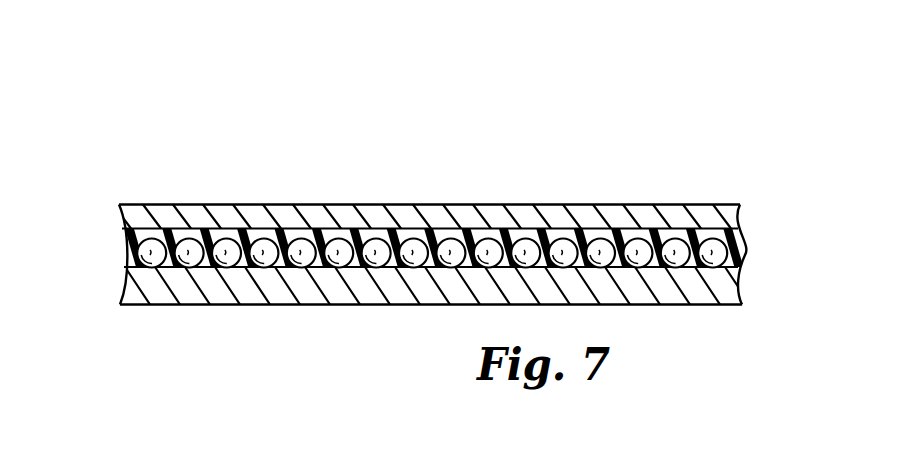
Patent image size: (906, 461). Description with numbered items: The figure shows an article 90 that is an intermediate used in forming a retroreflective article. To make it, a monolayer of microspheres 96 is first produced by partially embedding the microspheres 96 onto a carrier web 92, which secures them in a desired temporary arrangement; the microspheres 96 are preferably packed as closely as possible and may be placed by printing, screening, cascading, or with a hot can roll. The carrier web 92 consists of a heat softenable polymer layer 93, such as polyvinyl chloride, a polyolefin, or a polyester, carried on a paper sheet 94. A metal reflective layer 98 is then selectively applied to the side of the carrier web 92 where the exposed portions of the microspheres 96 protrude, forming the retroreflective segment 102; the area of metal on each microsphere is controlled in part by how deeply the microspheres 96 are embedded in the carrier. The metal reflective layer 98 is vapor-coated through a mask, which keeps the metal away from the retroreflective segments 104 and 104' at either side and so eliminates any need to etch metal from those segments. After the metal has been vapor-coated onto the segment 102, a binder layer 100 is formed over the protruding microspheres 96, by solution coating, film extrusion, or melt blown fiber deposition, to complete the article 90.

The article 90 is at (582, 96).
The carrier web 92 is at (110, 207).
The heat softenable polymer layer 93 is at (725, 240).
The paper sheet 94 is at (578, 207).
The microspheres 96 is at (440, 241).
The metal reflective layer 98 is at (418, 272).
The binder layer 100 is at (700, 288).
The retroreflective segment 102 is at (543, 147).
The retroreflective segment 104 is at (221, 141).
The retroreflective segment 104' is at (646, 144).